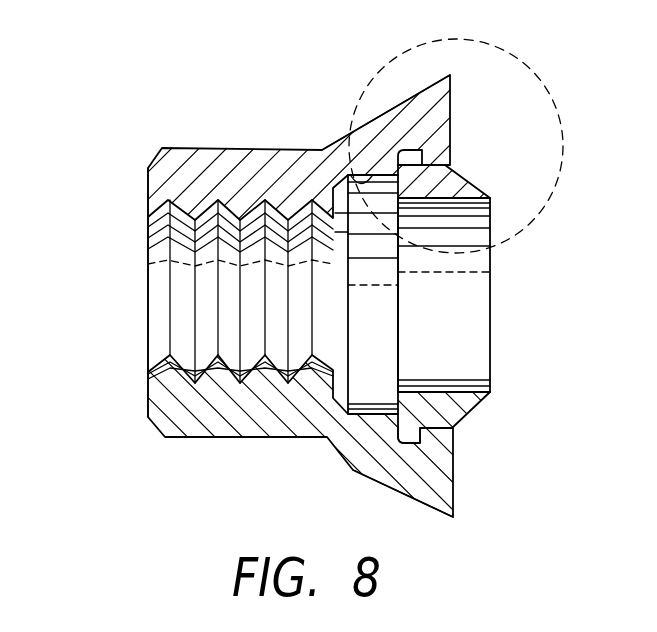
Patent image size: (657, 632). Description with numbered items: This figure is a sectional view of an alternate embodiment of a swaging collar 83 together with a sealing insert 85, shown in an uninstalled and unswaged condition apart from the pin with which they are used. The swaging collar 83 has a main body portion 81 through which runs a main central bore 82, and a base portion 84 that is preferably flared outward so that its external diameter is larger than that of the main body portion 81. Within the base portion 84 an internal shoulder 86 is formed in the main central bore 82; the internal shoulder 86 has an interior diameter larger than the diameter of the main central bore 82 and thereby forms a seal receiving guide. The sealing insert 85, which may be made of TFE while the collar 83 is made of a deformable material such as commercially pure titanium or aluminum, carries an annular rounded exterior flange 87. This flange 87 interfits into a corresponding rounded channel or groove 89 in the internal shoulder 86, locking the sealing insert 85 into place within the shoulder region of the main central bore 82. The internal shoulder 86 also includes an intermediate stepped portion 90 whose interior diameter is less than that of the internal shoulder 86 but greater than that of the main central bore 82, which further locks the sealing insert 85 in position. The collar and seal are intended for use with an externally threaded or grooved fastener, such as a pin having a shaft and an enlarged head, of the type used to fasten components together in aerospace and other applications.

The main body portion 81 is at (223, 437).
The main central bore 82 is at (182, 218).
The swaging collar 83 is at (145, 423).
The base portion 84 is at (395, 103).
The sealing insert 85 is at (468, 183).
The internal shoulder 86 is at (452, 426).
The annular rounded exterior flange 87 is at (403, 147).
The rounded channel or groove 89 is at (398, 438).
The intermediate stepped portion 90 is at (350, 181).